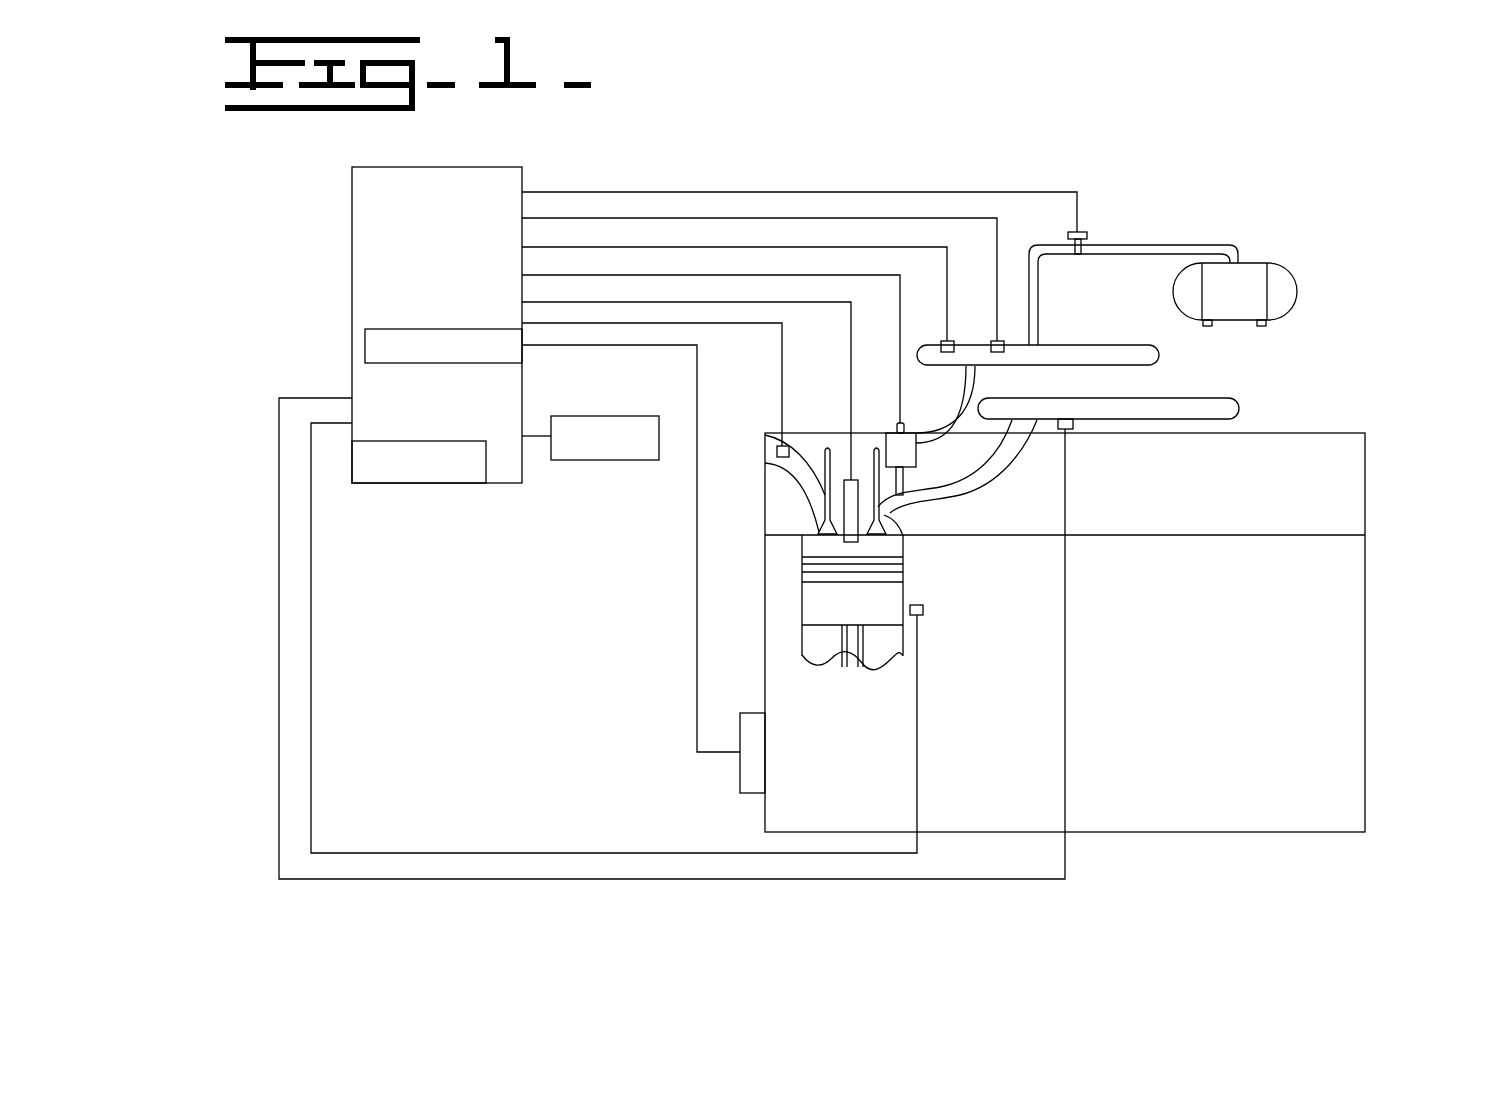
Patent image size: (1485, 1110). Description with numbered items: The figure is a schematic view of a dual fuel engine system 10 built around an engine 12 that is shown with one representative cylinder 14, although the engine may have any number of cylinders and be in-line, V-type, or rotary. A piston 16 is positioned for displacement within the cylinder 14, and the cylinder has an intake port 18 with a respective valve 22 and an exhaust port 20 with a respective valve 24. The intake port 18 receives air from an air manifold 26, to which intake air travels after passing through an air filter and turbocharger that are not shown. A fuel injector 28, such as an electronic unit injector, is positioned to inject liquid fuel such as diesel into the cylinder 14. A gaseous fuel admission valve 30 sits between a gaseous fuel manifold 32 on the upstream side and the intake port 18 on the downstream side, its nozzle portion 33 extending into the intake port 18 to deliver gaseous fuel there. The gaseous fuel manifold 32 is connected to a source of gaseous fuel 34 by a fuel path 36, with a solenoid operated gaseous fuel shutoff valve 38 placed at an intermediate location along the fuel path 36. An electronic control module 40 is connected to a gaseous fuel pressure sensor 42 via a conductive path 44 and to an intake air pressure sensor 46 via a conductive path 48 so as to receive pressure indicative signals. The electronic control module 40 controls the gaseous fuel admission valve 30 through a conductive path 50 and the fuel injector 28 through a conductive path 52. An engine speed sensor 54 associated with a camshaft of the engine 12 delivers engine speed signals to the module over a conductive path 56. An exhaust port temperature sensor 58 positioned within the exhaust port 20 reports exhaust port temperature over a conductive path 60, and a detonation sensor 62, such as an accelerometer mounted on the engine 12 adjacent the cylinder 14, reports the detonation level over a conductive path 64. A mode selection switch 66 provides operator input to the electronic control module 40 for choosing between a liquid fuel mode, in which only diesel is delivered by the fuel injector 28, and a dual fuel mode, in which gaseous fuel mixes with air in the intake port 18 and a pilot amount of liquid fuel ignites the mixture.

The dual fuel engine system 10 is at (1097, 152).
The engine 12 is at (1365, 662).
The cylinder 14 is at (903, 597).
The piston 16 is at (812, 577).
The intake port 18 is at (893, 505).
The exhaust port 20 is at (810, 493).
The valve 22 is at (882, 523).
The valve 24 is at (828, 520).
The air manifold 26 is at (1213, 398).
The fuel injector 28 is at (846, 480).
The gaseous fuel admission valve 30 is at (893, 435).
The gaseous fuel manifold 32 is at (1063, 345).
The nozzle portion 33 is at (923, 473).
The source of gaseous fuel 34 is at (1257, 265).
The fuel path 36 is at (1170, 245).
The solenoid operated gaseous fuel shutoff valve 38 is at (1090, 232).
The electronic control module 40 is at (497, 167).
The gaseous fuel pressure sensor 42 is at (947, 342).
The conductive path 44 is at (948, 270).
The intake air pressure sensor 46 is at (1073, 424).
The conductive path 48 is at (1067, 512).
The conductive path 50 is at (838, 276).
The conductive path 52 is at (851, 333).
The engine speed sensor 54 is at (740, 768).
The conductive path 56 is at (697, 675).
The exhaust port temperature sensor 58 is at (778, 446).
The conductive path 60 is at (700, 323).
The detonation sensor 62 is at (925, 609).
The conductive path 64 is at (543, 853).
The mode selection switch 66 is at (612, 417).